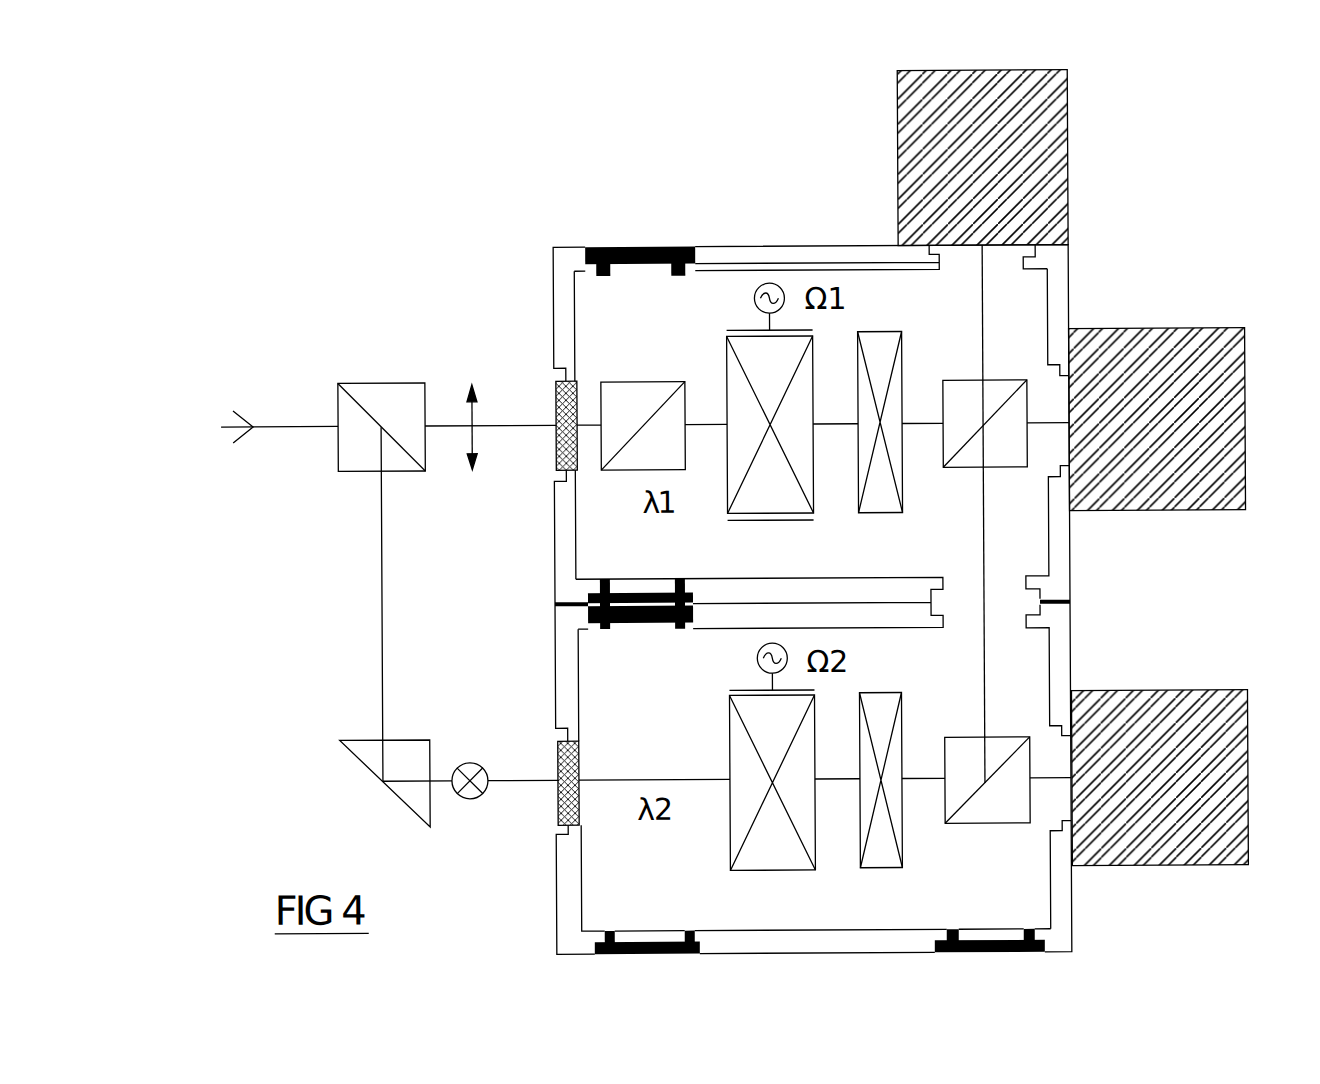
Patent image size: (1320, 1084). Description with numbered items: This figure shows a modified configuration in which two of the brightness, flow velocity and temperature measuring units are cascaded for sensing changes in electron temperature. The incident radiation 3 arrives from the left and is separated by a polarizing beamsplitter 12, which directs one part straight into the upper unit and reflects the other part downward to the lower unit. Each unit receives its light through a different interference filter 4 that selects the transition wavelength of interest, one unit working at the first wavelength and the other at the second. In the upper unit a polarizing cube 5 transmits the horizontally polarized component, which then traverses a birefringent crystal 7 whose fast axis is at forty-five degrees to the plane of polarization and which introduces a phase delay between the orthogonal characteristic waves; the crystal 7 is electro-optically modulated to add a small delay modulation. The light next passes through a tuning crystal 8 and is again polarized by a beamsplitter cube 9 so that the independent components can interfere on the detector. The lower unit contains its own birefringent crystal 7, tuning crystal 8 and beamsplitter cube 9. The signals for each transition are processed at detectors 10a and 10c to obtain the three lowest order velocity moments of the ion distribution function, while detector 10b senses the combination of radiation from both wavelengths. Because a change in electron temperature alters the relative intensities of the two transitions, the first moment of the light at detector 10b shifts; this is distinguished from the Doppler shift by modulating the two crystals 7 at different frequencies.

The incident radiation 3 is at (628, 582).
The interference filter 4 is at (555, 412).
The polarizing cube 5 is at (622, 402).
The birefringent crystal 7 is at (775, 500).
The tuning crystal 8 is at (870, 514).
The beamsplitter cube 9 is at (1003, 387).
The detector 10a is at (1070, 162).
The detector 10b is at (1158, 512).
The detector 10c is at (1166, 867).
The polarizing beamsplitter 12 is at (360, 381).